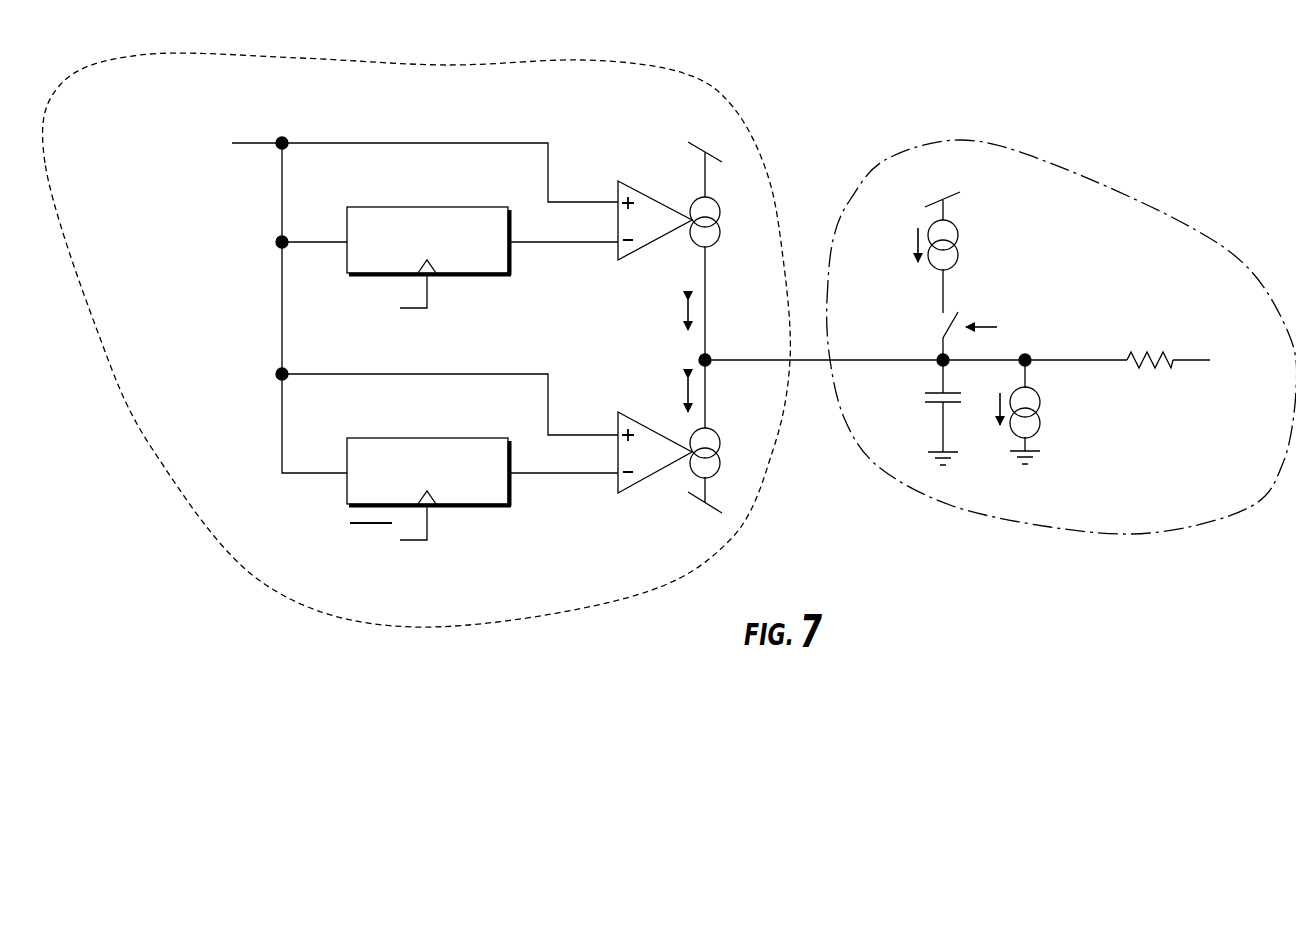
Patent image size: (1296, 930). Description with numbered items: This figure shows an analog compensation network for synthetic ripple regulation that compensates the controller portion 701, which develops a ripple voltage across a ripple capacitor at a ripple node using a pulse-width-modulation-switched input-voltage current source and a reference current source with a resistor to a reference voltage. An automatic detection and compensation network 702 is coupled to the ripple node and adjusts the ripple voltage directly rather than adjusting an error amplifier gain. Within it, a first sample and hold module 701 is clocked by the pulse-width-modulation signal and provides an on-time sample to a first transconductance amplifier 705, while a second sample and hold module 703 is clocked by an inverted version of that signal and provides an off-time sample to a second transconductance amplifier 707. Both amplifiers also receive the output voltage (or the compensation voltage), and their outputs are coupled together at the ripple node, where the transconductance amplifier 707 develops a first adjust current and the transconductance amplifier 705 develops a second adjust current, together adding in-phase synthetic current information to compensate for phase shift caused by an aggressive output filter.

The controller portion 701 is at (450, 207).
The automatic detection and compensation network 702 is at (205, 296).
The sample and hold module 703 is at (450, 438).
The first transconductance amplifier 705 is at (635, 183).
The second transconductance amplifier 707 is at (615, 422).